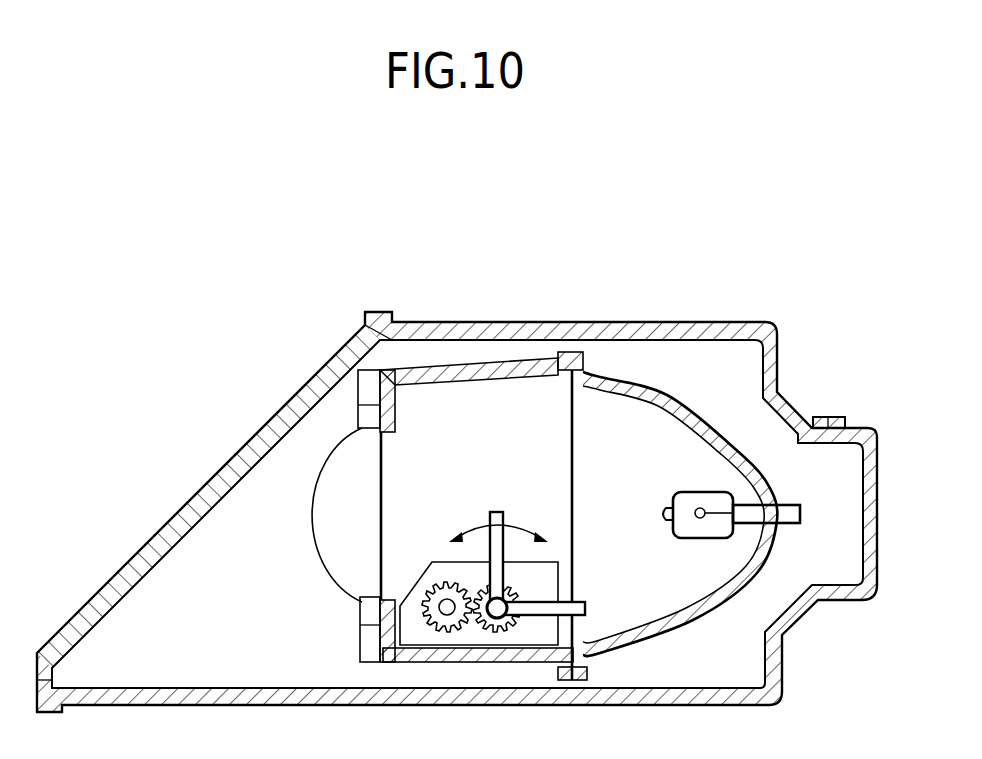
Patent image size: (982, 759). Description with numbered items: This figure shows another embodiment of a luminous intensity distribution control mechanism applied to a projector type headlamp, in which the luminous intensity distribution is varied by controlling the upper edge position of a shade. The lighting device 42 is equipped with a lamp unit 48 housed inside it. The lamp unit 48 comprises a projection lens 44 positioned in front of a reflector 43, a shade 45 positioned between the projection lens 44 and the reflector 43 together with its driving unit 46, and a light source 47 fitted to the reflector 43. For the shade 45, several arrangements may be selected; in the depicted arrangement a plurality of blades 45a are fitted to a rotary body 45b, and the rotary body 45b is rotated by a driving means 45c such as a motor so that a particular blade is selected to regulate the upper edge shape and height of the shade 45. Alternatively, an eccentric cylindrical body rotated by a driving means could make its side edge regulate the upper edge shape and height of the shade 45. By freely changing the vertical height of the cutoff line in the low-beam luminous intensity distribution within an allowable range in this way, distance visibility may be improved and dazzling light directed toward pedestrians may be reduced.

The lighting device 42 is at (624, 255).
The reflector 43 is at (672, 393).
The projection lens 44 is at (318, 540).
The shade 45 is at (472, 496).
The blades 45a is at (499, 512).
The rotary body 45b is at (520, 594).
The driving means 45c is at (440, 616).
The driving unit 46 is at (405, 600).
The light source 47 is at (694, 492).
The lamp unit 48 is at (270, 639).